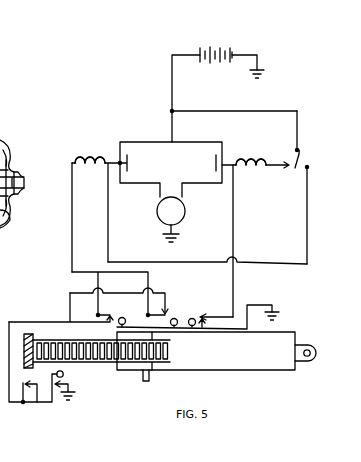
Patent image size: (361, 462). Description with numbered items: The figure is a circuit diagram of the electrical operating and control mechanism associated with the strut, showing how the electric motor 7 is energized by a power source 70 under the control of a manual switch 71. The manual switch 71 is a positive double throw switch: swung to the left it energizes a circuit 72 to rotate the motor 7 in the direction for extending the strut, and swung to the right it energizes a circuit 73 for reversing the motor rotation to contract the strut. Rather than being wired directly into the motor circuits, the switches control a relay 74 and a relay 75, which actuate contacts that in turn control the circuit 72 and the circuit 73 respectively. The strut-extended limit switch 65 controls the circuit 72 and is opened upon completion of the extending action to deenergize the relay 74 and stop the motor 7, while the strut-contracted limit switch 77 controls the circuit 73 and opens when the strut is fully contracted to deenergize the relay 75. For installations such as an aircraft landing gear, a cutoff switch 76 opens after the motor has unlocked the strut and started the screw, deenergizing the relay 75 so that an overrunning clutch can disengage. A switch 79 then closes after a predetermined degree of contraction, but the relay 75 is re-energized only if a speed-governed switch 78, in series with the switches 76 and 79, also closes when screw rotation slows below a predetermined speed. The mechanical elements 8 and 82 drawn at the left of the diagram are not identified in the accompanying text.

The gear hub 8 is at (0, 117).
The hub member 82 is at (0, 236).
The power source 70 is at (205, 65).
The circuit 73 is at (132, 142).
The circuit 72 is at (188, 142).
The relay 75 is at (78, 148).
The relay 74 is at (242, 150).
The manual switch 71 is at (303, 152).
The electric motor 7 is at (185, 220).
The switch 79 is at (104, 313).
The cutoff switch 76 is at (164, 305).
The strut-extended limit switch 65 is at (198, 312).
The speed-governed switch 78 is at (30, 398).
The strut-contracted limit switch 77 is at (55, 400).